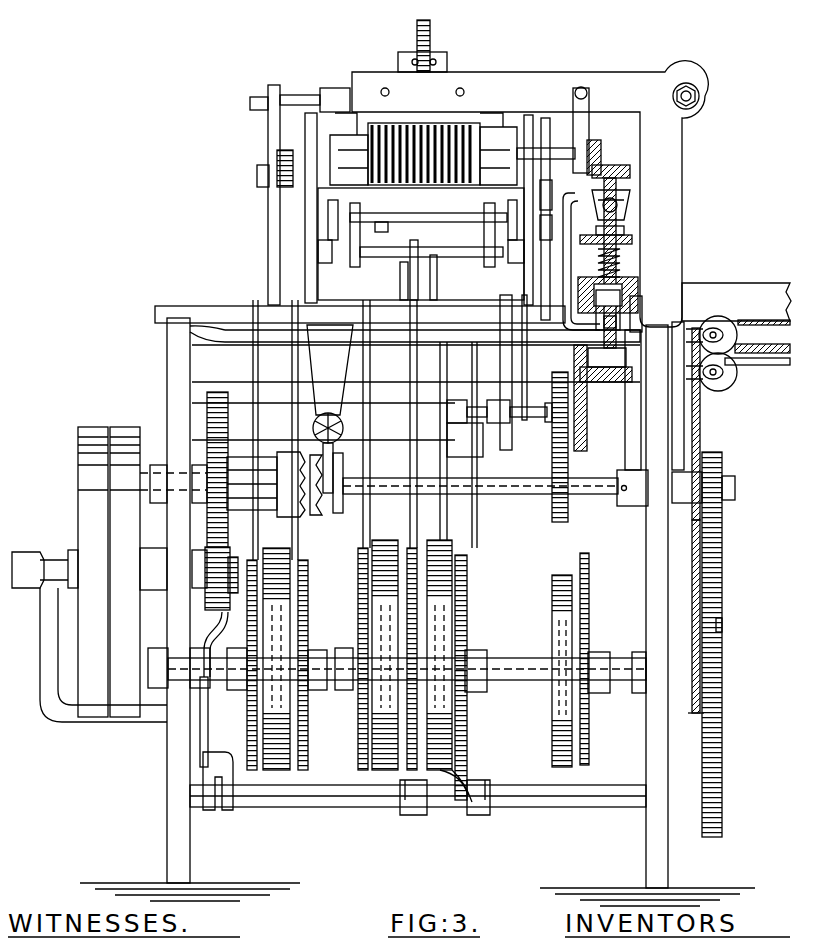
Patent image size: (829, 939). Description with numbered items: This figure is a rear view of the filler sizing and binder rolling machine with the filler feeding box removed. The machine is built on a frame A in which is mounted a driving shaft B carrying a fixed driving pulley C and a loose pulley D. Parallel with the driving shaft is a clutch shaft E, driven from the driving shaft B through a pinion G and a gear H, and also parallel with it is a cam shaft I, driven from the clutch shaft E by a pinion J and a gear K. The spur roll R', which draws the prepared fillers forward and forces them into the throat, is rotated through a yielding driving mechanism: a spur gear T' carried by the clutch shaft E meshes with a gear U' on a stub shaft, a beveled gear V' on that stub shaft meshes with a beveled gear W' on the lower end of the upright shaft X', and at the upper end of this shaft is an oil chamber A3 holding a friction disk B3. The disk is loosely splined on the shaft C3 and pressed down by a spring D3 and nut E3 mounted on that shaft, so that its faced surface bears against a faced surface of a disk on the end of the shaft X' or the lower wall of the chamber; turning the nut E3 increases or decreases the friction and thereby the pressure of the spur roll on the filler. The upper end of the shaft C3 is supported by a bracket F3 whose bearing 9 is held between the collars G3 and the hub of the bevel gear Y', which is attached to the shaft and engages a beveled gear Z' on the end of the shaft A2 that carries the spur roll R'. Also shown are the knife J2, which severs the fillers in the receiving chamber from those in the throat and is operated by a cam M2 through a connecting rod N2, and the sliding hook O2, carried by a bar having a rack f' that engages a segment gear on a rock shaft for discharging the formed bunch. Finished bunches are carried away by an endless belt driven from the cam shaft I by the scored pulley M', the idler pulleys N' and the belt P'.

The frame A is at (172, 748).
The driving shaft B is at (235, 575).
The fixed driving pulley C is at (128, 430).
The loose pulley D is at (95, 430).
The clutch shaft E is at (493, 484).
The pinion G is at (215, 592).
The gear H is at (212, 455).
The cam shaft I is at (514, 668).
The pinion J is at (720, 458).
The gear K is at (722, 620).
The scored pulley M' is at (730, 616).
The cam M2 is at (562, 595).
The idler pulleys N' is at (731, 376).
The connecting rod N2 is at (577, 550).
The belt P' is at (735, 424).
The spur gear T' is at (542, 457).
The gear U' is at (499, 432).
The beveled gear V' is at (594, 403).
The beveled gear W' is at (617, 405).
The upright shaft X' is at (638, 317).
The bevel gear Y' is at (628, 226).
The beveled gear Z' is at (614, 130).
The shaft A2 is at (547, 147).
The oil chamber A3 is at (632, 307).
The friction disk B3 is at (623, 280).
The shaft C3 is at (613, 236).
The spring D3 is at (615, 260).
The nut E3 is at (612, 232).
The bracket F3 is at (572, 160).
The collars G3 is at (612, 202).
The knife J2 is at (480, 117).
The sliding hook O2 is at (417, 35).
The spur roll R' is at (479, 194).
The rack f' is at (437, 44).
The bearing 9 is at (612, 206).